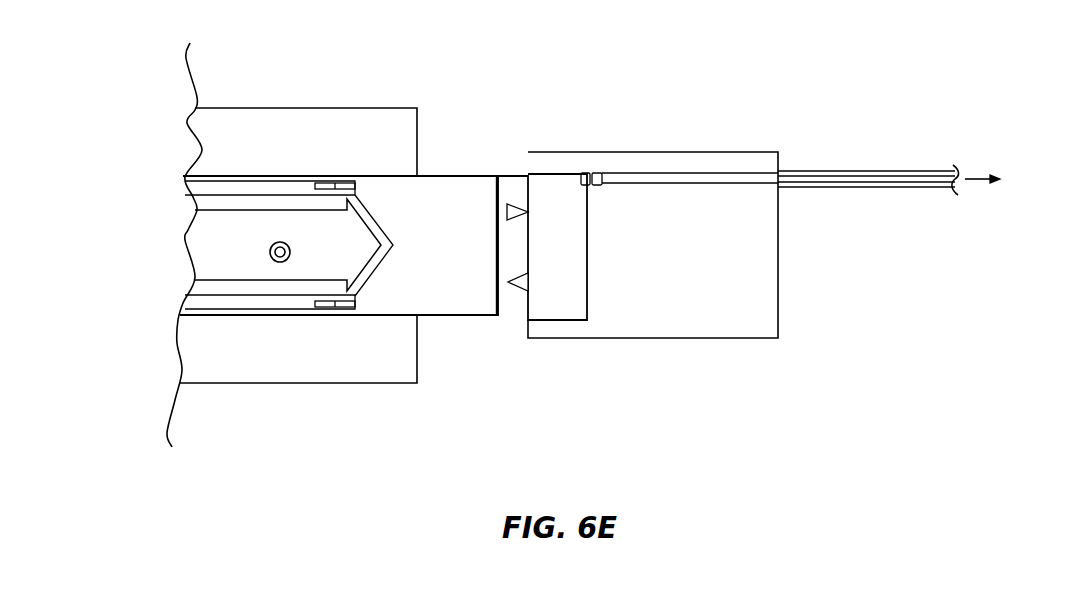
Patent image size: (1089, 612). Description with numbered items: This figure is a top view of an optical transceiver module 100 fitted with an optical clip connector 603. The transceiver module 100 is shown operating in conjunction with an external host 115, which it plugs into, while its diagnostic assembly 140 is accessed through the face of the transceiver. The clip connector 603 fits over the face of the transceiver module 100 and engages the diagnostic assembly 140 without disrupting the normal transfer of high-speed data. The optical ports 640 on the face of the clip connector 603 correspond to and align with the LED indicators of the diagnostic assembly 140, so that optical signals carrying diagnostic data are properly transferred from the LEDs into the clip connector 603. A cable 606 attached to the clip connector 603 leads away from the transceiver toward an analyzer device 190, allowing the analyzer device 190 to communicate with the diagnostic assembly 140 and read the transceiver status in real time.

The external host 115 is at (341, 367).
The optical transceiver module 100 is at (457, 257).
The clip connector 603 is at (678, 326).
The diagnostic assembly 140 is at (585, 175).
The optical port 640 is at (603, 177).
The cable 606 is at (857, 162).
The analyzer device 190 is at (1020, 212).